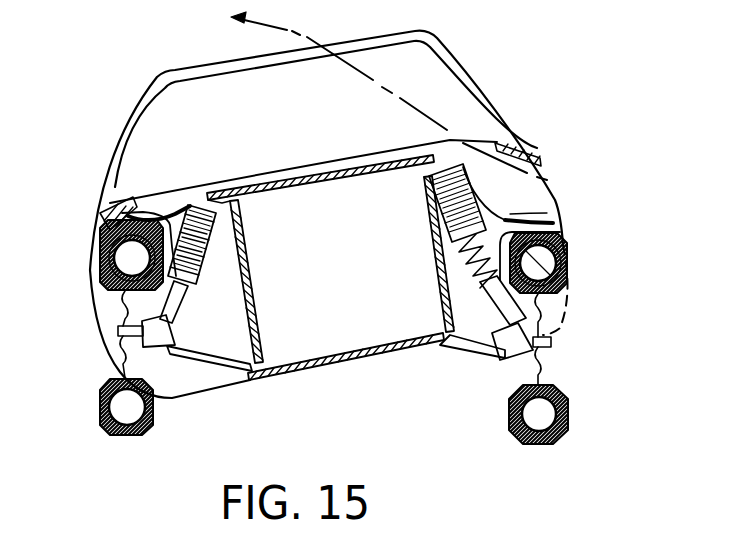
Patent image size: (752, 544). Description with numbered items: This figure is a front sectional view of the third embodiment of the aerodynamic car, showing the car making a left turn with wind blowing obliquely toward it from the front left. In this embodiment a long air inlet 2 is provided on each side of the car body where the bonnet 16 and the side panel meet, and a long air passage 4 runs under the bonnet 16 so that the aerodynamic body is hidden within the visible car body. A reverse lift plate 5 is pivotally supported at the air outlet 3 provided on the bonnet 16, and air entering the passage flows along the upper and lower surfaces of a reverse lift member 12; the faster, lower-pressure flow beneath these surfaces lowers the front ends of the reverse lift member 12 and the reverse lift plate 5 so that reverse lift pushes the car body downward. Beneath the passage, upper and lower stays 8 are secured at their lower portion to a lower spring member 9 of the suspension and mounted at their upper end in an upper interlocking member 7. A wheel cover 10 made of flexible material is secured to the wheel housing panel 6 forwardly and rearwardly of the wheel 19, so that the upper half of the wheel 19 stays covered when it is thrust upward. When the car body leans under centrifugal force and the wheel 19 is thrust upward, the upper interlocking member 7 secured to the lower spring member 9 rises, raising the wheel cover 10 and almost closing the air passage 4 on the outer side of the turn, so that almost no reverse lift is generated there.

The air inlet 2 is at (556, 208).
The air outlet 3 is at (491, 133).
The air passage 4 is at (143, 193).
The reverse lift plate 5 is at (182, 200).
The wheel housing panel 6 is at (330, 244).
The upper interlocking member 7 is at (138, 208).
The stay 8 is at (172, 295).
The lower spring member 9 is at (490, 300).
The wheel cover 10 is at (163, 213).
The reverse lift member 12 is at (110, 207).
The bonnet 16 is at (353, 163).
The wheel 19 is at (100, 419).